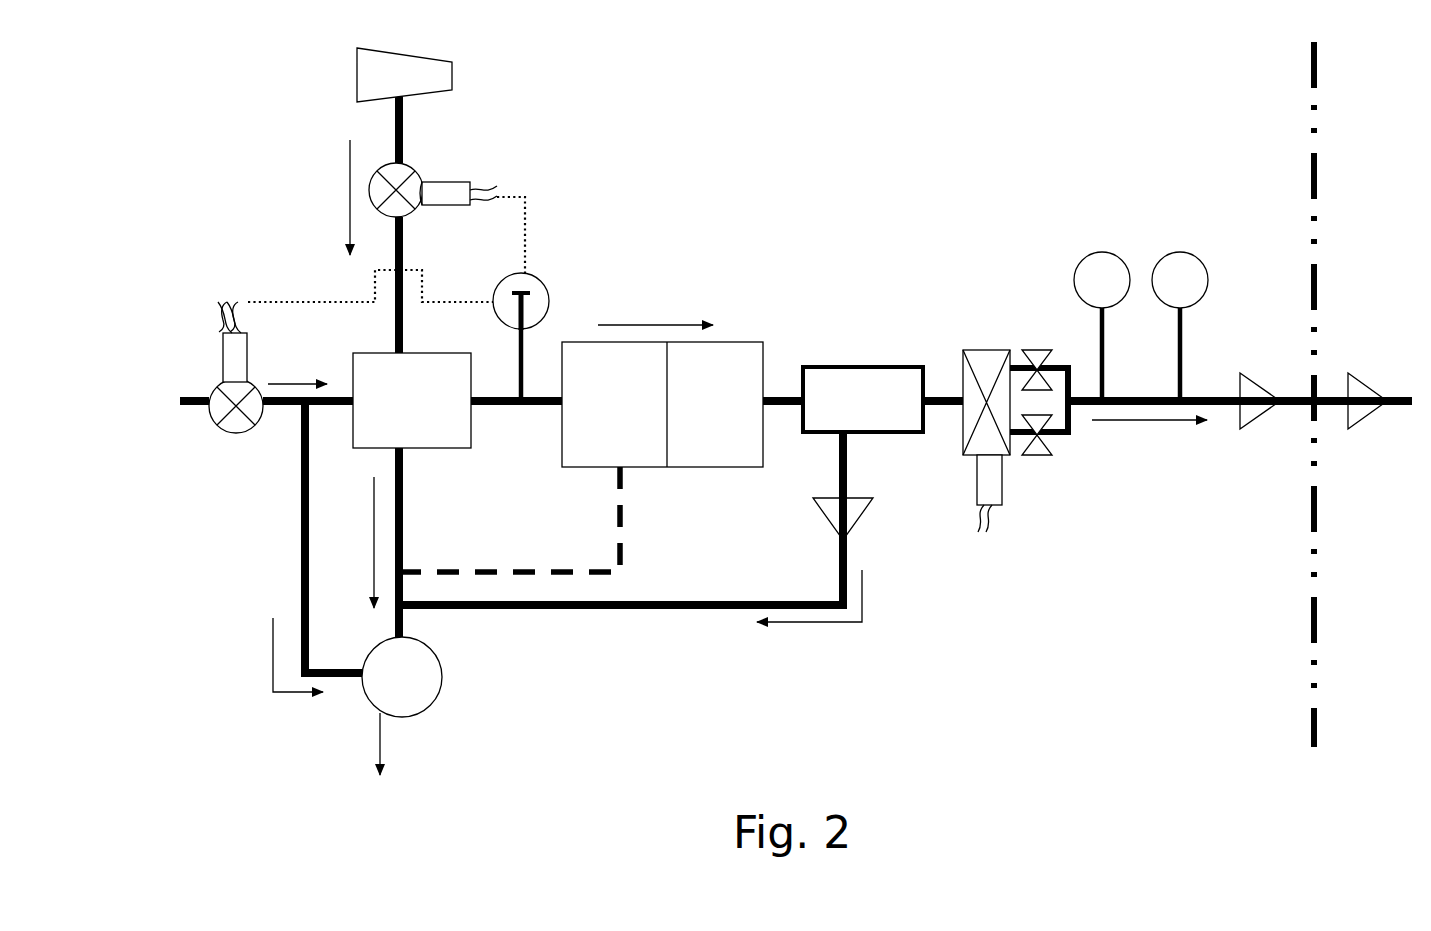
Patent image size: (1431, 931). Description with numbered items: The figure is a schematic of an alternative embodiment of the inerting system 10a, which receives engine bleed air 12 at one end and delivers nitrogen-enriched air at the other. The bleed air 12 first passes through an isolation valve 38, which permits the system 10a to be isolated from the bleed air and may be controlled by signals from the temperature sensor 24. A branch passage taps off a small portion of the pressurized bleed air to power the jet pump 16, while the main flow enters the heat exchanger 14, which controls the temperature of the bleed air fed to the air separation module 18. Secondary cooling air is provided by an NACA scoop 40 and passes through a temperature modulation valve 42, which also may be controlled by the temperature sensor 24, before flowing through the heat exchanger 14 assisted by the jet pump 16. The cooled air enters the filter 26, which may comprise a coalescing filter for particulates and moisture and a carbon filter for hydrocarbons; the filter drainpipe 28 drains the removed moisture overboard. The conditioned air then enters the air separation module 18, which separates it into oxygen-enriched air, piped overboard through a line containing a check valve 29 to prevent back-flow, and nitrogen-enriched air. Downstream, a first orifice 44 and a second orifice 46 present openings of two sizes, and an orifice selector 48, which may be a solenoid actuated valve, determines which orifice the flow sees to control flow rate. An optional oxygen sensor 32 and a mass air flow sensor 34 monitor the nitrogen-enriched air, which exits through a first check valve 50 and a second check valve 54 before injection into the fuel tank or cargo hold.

The system 10a is at (987, 80).
The bleed air 12 is at (147, 466).
The heat exchanger 14 is at (440, 448).
The jet pump 16 is at (443, 662).
The air separation module 18 is at (850, 366).
The temperature sensor 24 is at (543, 277).
The filter 26 is at (733, 342).
The filter drainpipe 28 is at (621, 518).
The check valve 29 is at (862, 518).
The oxygen sensor 32 is at (1090, 253).
The mass air flow sensor 34 is at (1176, 253).
The isolation valve 38 is at (234, 437).
The NACA scoop 40 is at (423, 55).
The temperature modulation valve 42 is at (413, 168).
The first orifice 44 is at (1037, 350).
The second orifice 46 is at (1037, 456).
The orifice selector 48 is at (990, 350).
The first check valve 50 is at (1258, 413).
The second check valve 54 is at (1372, 408).